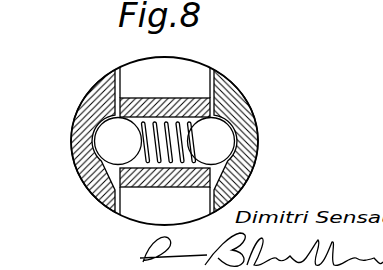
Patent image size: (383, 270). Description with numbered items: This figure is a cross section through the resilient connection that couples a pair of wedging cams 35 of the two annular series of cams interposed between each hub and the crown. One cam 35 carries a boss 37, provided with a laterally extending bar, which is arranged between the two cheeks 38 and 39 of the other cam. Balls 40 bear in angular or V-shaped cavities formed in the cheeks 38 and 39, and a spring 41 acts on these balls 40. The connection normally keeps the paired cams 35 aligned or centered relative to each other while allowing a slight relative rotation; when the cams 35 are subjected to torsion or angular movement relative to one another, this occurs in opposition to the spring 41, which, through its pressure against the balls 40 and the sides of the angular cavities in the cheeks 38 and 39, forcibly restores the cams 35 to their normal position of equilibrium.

The wedging cam 35 is at (161, 208).
The boss 37 is at (137, 103).
The cheek 38 is at (235, 110).
The cheek 39 is at (90, 170).
The balls 40 is at (113, 136).
The spring 41 is at (175, 98).